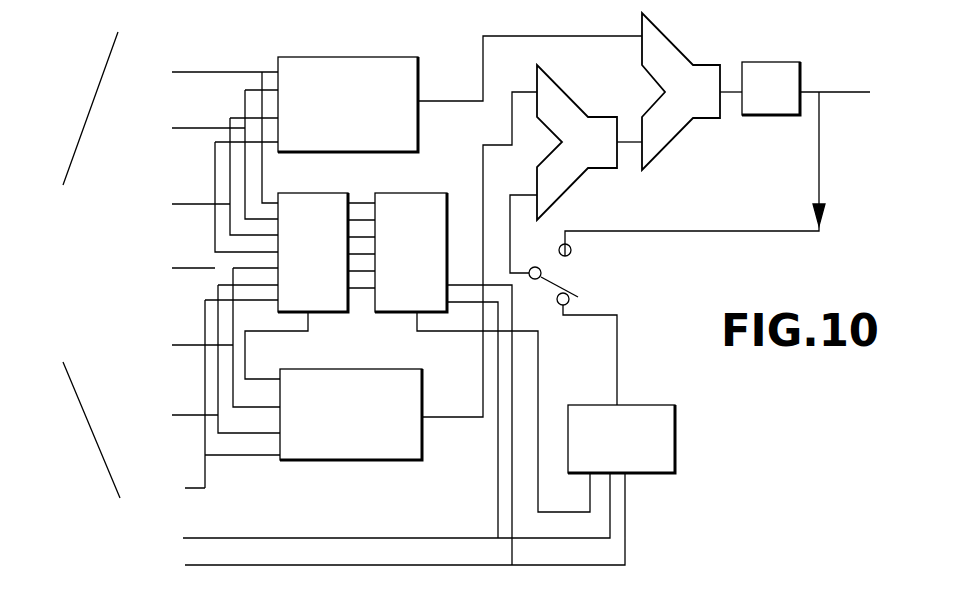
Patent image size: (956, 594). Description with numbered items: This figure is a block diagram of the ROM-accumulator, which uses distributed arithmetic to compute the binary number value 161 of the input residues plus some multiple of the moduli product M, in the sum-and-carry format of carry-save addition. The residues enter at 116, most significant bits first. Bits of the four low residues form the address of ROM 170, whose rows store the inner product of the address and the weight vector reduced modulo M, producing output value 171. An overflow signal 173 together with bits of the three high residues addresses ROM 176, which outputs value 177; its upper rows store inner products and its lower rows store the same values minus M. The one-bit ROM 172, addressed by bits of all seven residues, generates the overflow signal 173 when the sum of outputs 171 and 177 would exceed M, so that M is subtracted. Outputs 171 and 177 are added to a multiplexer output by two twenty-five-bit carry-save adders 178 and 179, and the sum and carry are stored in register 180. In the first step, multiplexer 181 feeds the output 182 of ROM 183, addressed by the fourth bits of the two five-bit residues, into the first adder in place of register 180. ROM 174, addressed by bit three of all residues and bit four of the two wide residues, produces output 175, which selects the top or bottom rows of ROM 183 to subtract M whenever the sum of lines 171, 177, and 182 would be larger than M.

The residue input 116 is at (324, 307).
The binary number value 161 is at (719, 158).
The ROM 170 is at (348, 104).
The ROM output value 171 is at (530, 86).
The 128-bit-by-1 ROM 172 is at (326, 252).
The overflow signal 173 is at (279, 345).
The 512-bit ROM 174 is at (411, 252).
The ROM output 175 is at (503, 412).
The ROM 176 is at (351, 414).
The ROM output value 177 is at (479, 273).
The carry-save adder 178 is at (576, 169).
The carry-save adder 179 is at (692, 91).
The register 180 is at (770, 137).
The multiplexer 181 is at (578, 274).
The ROM output 182 is at (620, 355).
The ROM 183 is at (621, 439).